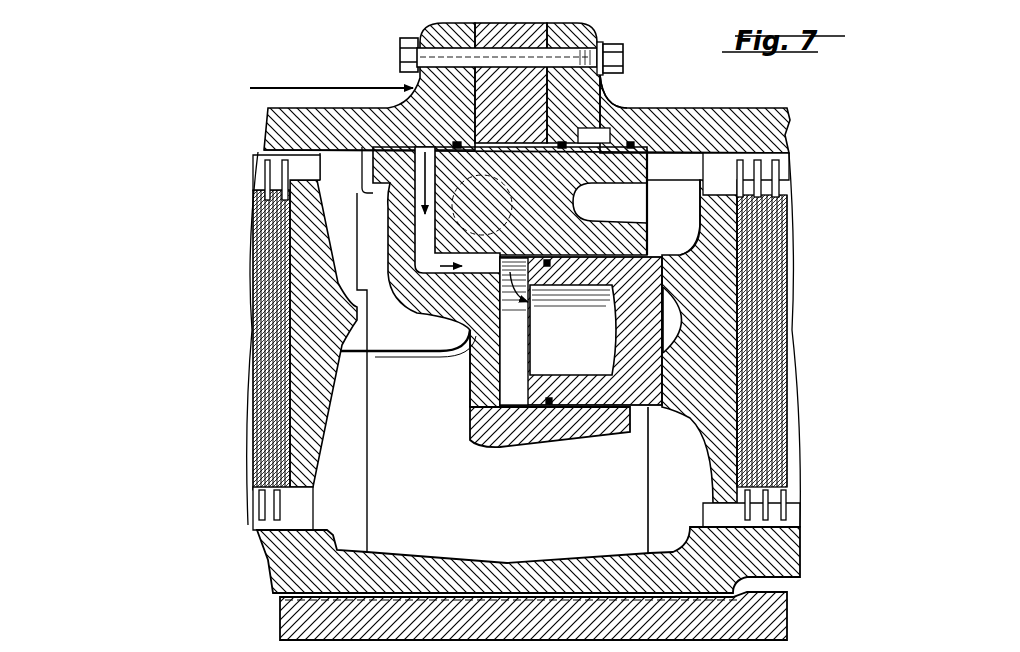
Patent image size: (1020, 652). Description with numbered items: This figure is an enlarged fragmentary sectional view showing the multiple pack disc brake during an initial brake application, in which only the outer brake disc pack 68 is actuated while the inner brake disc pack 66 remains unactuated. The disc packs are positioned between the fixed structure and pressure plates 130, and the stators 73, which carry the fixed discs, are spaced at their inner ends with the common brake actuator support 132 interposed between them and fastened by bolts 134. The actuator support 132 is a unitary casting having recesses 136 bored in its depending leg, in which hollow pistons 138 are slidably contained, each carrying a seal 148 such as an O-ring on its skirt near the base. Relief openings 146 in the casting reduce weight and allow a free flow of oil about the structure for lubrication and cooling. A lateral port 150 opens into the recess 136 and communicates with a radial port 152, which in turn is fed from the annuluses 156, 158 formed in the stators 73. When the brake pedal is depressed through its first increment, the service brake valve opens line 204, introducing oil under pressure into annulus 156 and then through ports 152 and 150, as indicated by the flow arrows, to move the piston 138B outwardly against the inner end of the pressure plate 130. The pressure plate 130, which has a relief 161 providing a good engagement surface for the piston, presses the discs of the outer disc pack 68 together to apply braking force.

The inner brake disc pack 66 is at (256, 290).
The outer brake disc pack 68 is at (792, 306).
The stator 73 is at (438, 25).
The pressure plate 130 is at (318, 425).
The common brake actuator support 132 is at (507, 30).
The bolt 134 is at (606, 80).
The recess 136 is at (480, 368).
The piston 138 is at (595, 309).
The outer pack piston 138B is at (604, 323).
The relief opening 146 is at (632, 210).
The seal 148 is at (537, 430).
The lateral port 150 is at (420, 318).
The radial port 152 is at (420, 240).
The annulus 156 is at (392, 102).
The annulus 158 is at (630, 108).
The relief 161 is at (673, 362).
The line 204 is at (280, 86).